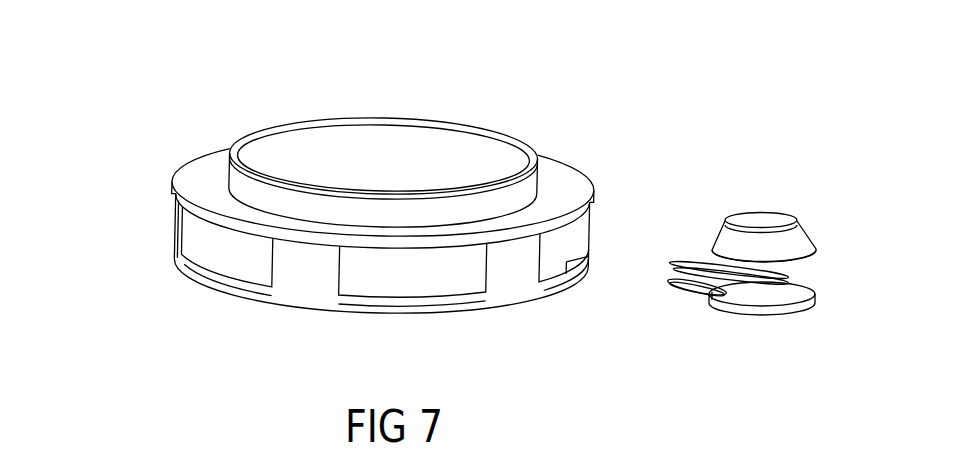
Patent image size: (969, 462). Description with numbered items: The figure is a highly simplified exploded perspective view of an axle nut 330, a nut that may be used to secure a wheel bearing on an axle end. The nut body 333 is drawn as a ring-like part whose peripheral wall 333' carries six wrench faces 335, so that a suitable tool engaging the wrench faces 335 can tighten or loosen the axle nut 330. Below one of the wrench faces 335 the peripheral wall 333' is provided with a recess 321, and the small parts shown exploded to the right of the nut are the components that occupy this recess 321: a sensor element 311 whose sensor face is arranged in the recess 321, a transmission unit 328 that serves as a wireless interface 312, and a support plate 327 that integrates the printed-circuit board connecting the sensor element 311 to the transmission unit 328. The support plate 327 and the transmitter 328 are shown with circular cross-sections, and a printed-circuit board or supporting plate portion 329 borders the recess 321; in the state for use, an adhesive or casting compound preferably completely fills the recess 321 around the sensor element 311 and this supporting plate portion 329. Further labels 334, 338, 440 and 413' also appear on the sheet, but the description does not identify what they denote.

The axle nut 330 is at (168, 119).
The nut body 333 is at (411, 163).
The peripheral wall 333' is at (102, 218).
The top disc 334 is at (380, 152).
The wrench faces 335 is at (222, 243).
The skirt 338 is at (300, 310).
The recess 321 is at (583, 245).
The sensor element 311 is at (707, 216).
The transmission unit 328 is at (770, 218).
The supporting plate portion 329 is at (672, 313).
The wireless interface 312 is at (713, 334).
The support plate 327 is at (758, 289).
The component 440 is at (33, 461).
The component 413' is at (790, 449).